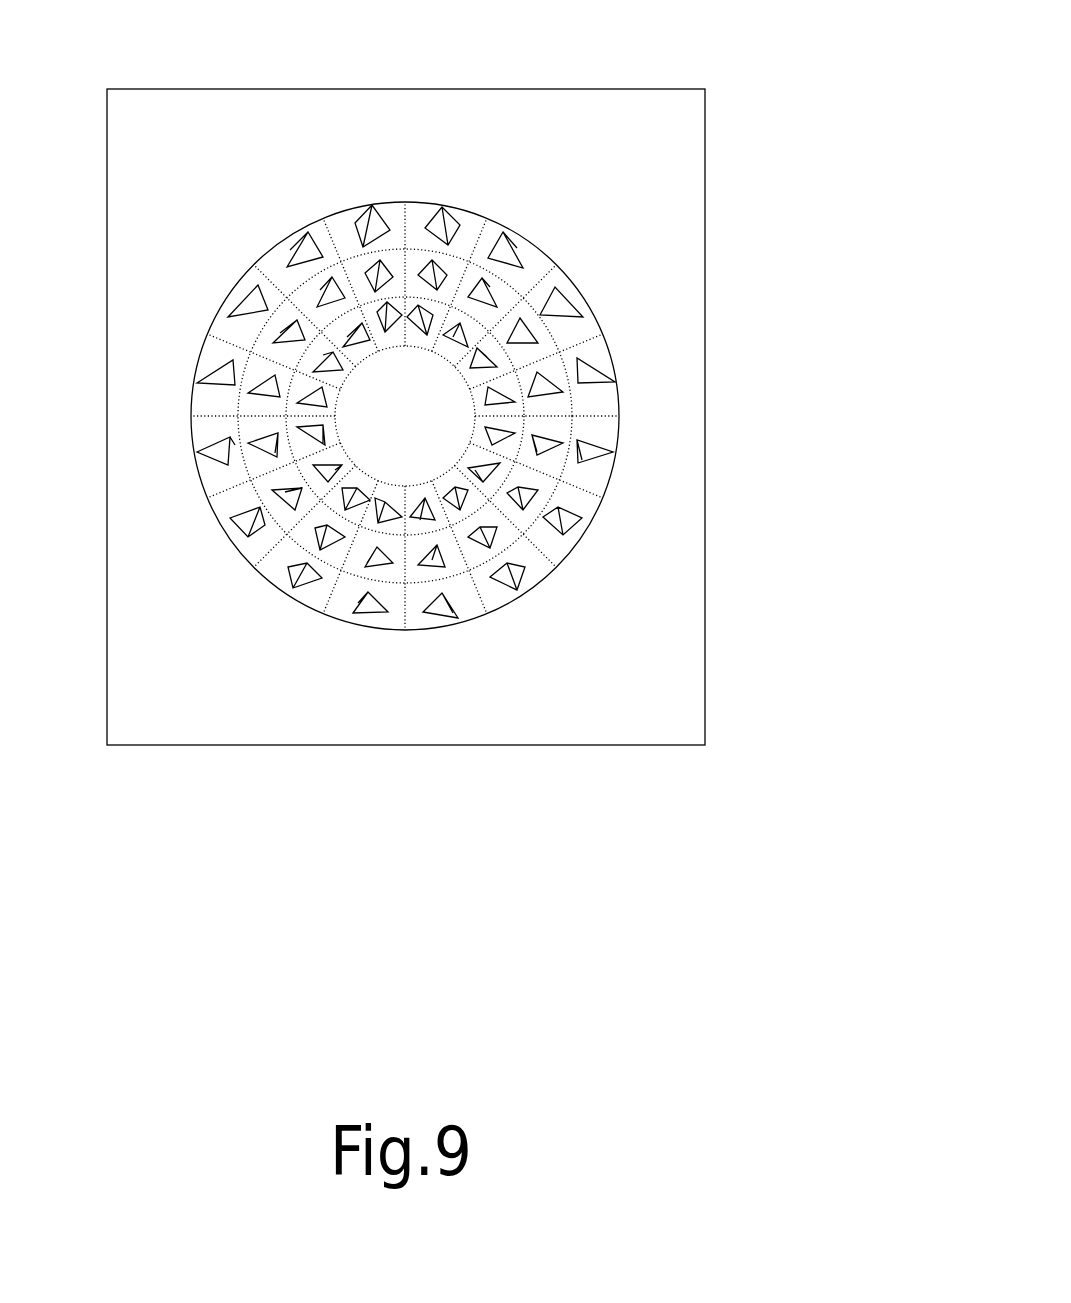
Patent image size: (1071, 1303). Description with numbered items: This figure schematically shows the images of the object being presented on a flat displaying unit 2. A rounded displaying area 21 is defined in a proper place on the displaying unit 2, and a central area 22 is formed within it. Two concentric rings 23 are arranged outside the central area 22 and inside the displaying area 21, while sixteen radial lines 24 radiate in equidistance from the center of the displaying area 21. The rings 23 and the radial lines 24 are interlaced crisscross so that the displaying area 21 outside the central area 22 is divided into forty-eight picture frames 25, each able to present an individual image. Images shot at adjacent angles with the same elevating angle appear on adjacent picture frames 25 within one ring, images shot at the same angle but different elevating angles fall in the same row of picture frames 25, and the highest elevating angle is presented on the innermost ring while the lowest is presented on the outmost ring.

The displaying unit 2 is at (589, 158).
The displaying area 21 is at (165, 440).
The central area 22 is at (420, 413).
The concentric rings 23 is at (669, 574).
The radial lines 24 is at (497, 445).
The picture frames 25 is at (602, 403).